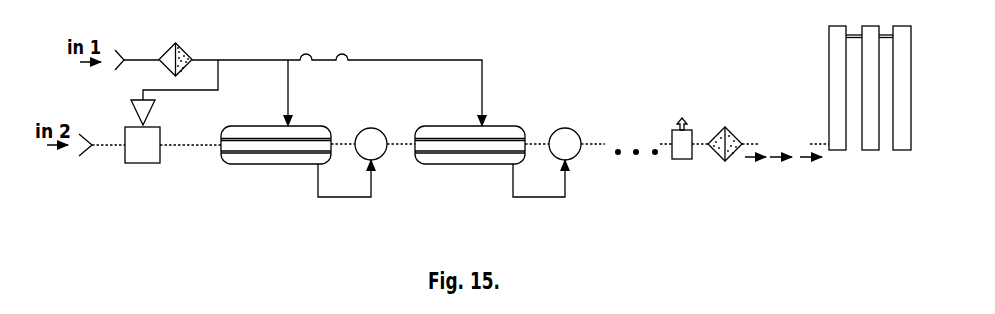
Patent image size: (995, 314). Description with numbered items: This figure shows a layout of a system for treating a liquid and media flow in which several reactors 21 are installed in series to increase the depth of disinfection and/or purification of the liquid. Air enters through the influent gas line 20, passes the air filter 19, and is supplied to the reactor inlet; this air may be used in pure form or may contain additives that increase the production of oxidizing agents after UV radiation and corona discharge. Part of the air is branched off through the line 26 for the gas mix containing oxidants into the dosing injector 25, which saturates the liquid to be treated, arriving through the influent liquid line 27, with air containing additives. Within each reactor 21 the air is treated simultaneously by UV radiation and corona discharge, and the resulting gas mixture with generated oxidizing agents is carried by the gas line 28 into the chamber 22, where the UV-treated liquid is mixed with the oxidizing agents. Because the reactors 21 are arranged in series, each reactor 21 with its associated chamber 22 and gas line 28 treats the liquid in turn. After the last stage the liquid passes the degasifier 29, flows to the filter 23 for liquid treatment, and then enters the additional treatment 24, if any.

The air filter 19 is at (161, 44).
The influent gas line 20 is at (306, 69).
The reactor 21 is at (373, 88).
The chamber for mixing of liquid being treated with oxidizing agents 22 is at (455, 86).
The filter for liquid treatment 23 is at (701, 86).
The additional treatment of liquid 24 is at (842, 81).
The dosing injector 25 is at (94, 176).
The line for gas mix containing oxidants 26 is at (194, 107).
The influent liquid line 27 is at (165, 183).
The gas line with oxidizing agents 28 is at (412, 192).
The degasifier 29 is at (657, 171).